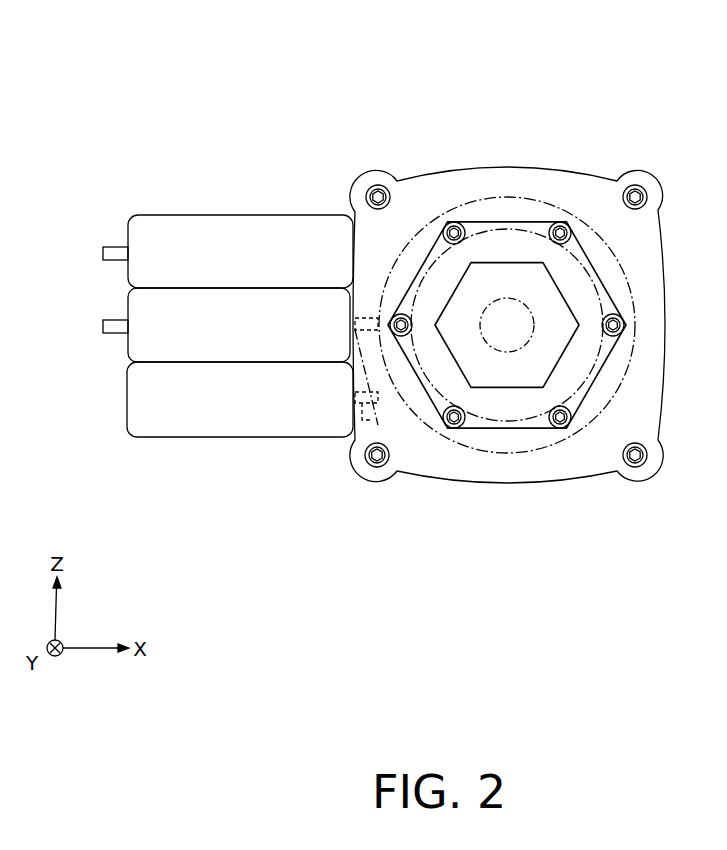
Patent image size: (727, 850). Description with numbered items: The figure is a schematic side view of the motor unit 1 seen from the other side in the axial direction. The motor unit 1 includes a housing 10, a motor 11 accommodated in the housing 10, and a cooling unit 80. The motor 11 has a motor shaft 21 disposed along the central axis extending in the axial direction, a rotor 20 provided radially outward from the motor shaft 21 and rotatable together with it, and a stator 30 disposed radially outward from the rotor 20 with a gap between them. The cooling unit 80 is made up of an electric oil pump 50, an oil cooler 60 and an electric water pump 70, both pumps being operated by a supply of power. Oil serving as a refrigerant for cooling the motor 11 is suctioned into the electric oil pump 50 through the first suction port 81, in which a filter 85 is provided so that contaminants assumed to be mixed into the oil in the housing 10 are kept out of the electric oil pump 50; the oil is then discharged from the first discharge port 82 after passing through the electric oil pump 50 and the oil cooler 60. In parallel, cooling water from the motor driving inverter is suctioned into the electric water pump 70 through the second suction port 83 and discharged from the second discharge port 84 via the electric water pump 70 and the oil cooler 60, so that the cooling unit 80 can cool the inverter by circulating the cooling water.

The motor unit 1 is at (598, 80).
The housing 10 is at (593, 173).
The motor 11 is at (489, 466).
The rotor 20 is at (525, 420).
The motor shaft 21 is at (502, 297).
The stator 30 is at (448, 210).
The electric oil pump 50 is at (260, 415).
The oil cooler 60 is at (193, 342).
The electric water pump 70 is at (202, 230).
The cooling unit 80 is at (268, 204).
The first suction port 81 is at (378, 332).
The first discharge port 82 is at (368, 330).
The second suction port 83 is at (115, 247).
The second discharge port 84 is at (113, 333).
The filter 85 is at (377, 468).